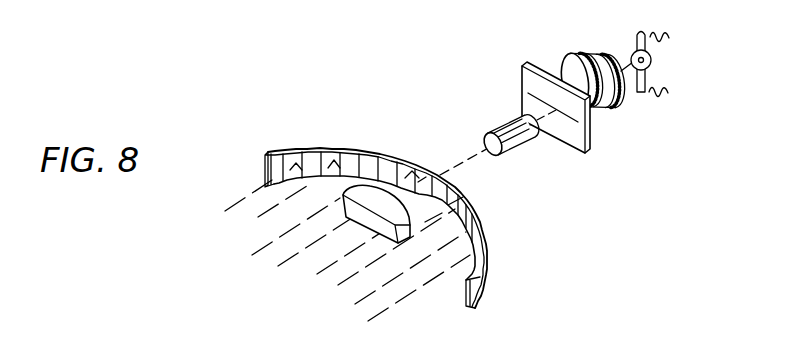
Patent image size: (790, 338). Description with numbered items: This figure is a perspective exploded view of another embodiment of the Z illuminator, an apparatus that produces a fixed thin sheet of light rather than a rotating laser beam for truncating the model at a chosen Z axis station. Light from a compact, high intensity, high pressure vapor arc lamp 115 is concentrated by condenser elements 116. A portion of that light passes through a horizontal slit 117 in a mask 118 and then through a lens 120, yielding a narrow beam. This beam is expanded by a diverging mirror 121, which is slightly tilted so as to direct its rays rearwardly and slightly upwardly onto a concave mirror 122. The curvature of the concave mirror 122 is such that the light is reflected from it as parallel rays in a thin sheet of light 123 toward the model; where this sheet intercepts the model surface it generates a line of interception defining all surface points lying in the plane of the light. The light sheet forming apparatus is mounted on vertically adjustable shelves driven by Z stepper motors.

The high pressure vapor arc lamp 115 is at (633, 54).
The condenser elements 116 is at (569, 62).
The horizontal slit 117 is at (531, 98).
The mask 118 is at (574, 138).
The lens 120 is at (504, 150).
The diverging mirror 121 is at (365, 198).
The concave mirror 122 is at (347, 127).
The sheet of light 123 is at (268, 231).